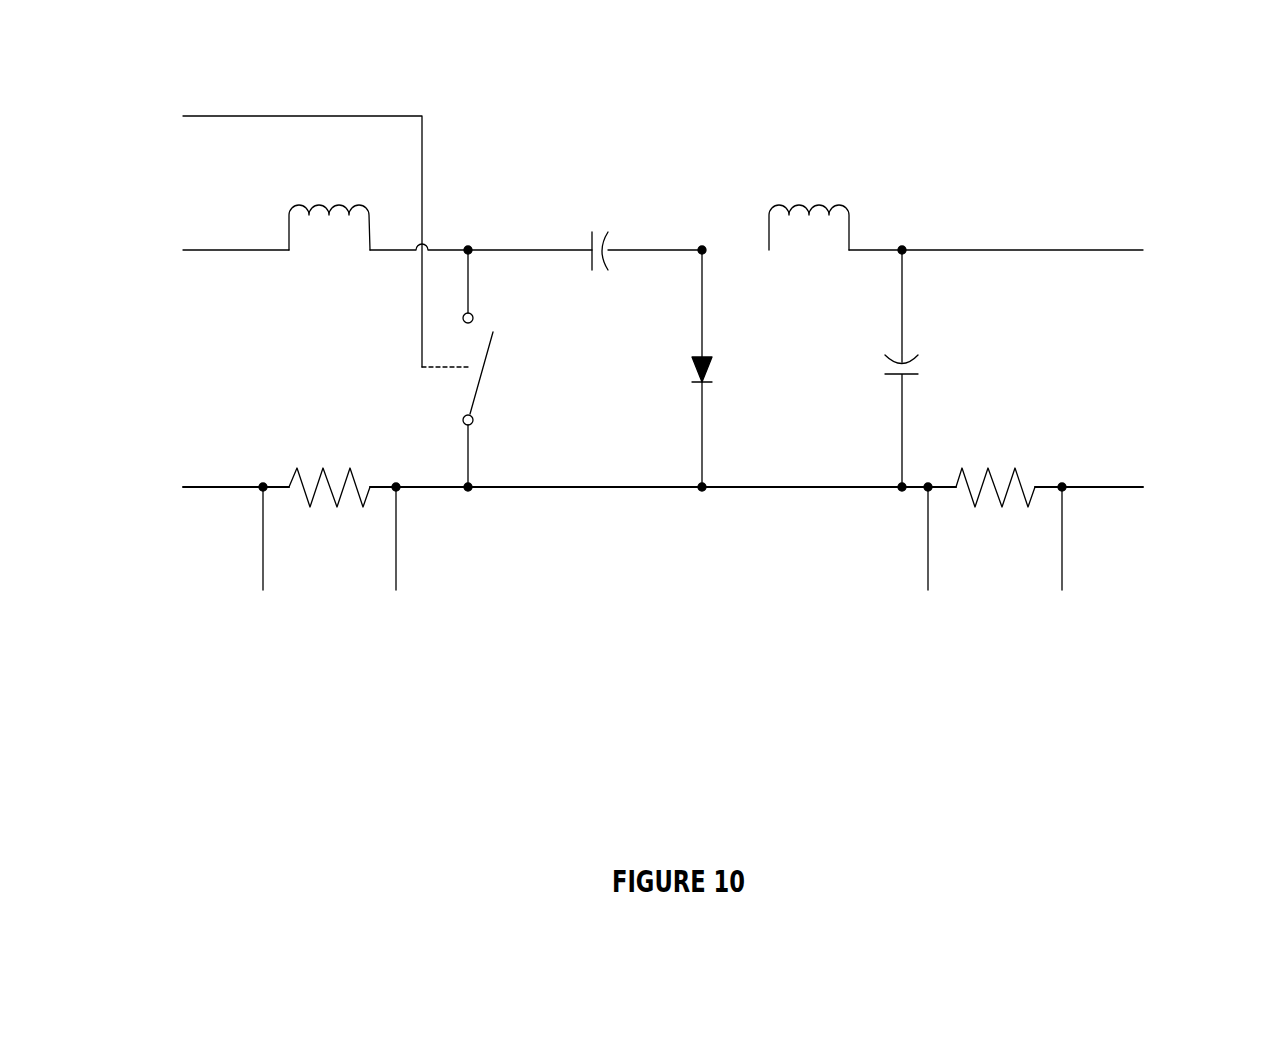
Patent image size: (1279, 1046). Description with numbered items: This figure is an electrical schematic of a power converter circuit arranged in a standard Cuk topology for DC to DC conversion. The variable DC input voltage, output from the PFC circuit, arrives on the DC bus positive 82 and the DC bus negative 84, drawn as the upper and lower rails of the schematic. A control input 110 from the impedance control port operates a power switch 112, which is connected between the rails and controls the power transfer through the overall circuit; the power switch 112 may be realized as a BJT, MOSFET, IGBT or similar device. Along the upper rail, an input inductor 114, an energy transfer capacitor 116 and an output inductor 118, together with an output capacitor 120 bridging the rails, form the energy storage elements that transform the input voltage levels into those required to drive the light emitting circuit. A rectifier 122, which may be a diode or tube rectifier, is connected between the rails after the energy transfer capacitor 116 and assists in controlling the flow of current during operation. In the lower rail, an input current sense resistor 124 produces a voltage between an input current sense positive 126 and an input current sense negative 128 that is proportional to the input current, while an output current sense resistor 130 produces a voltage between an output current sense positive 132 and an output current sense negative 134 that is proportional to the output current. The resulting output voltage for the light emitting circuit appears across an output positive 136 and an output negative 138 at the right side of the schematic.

The control input 110 is at (123, 94).
The DC bus positive 82 is at (125, 218).
The DC bus negative 84 is at (125, 453).
The input inductor 114 is at (304, 198).
The energy transfer capacitor 116 is at (593, 218).
The output inductor 118 is at (785, 193).
The power switch 112 is at (501, 371).
The rectifier 122 is at (724, 371).
The output capacitor 120 is at (931, 371).
The input current sense resistor 124 is at (302, 450).
The output current sense resistor 130 is at (973, 455).
The input current sense negative 128 is at (248, 725).
The input current sense positive 126 is at (382, 725).
The output current sense positive 132 is at (911, 723).
The output current sense negative 134 is at (1051, 723).
The output positive 136 is at (1207, 452).
The output negative 138 is at (1207, 217).